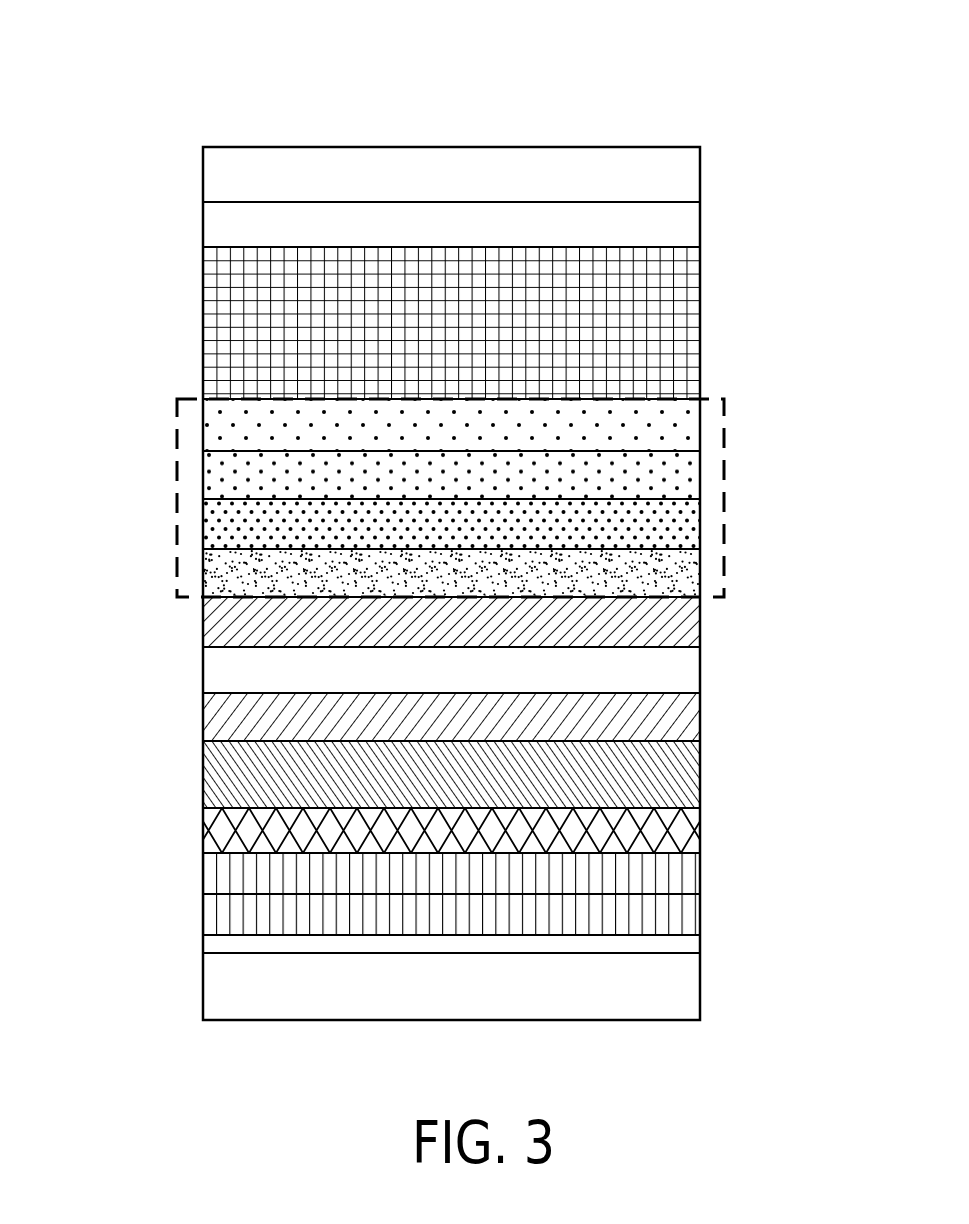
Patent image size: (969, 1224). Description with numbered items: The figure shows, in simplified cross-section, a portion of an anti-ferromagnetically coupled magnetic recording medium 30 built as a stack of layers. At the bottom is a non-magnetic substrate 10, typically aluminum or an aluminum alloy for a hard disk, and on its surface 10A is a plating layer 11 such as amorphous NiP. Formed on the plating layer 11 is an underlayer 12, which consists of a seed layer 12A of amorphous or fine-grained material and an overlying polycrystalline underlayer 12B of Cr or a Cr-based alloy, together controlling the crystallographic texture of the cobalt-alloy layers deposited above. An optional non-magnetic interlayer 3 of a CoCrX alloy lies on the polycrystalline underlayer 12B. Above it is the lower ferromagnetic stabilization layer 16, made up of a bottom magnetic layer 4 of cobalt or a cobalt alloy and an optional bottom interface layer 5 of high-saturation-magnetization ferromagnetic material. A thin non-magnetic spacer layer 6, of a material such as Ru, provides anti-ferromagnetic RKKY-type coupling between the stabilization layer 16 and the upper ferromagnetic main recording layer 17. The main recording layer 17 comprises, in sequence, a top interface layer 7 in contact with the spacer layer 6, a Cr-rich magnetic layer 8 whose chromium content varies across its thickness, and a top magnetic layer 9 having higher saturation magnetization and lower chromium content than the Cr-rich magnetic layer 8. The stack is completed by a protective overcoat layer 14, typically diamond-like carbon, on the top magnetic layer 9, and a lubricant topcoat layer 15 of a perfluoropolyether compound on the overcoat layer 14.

The magnetic recording medium 30 is at (390, 130).
The lubricant topcoat layer 15 is at (757, 170).
The protective overcoat layer 14 is at (757, 227).
The top magnetic layer 9 is at (757, 322).
The Cr-rich magnetic layer 8 is at (730, 400).
The upper ferromagnetic main recording layer 17 is at (130, 245).
The top interface layer 7 is at (757, 620).
The non-magnetic spacer layer 6 is at (757, 668).
The lower ferromagnetic stabilization layer 16 is at (132, 695).
The bottom interface layer 5 is at (757, 716).
The bottom magnetic layer 4 is at (757, 777).
The non-magnetic interlayer 3 is at (757, 836).
The underlayer 12 is at (447, 894).
The polycrystalline underlayer 12B is at (178, 871).
The seed layer 12A is at (178, 914).
The plating layer 11 is at (757, 942).
The non-magnetic substrate 10 is at (757, 982).
The surface of substrate 10A is at (224, 955).